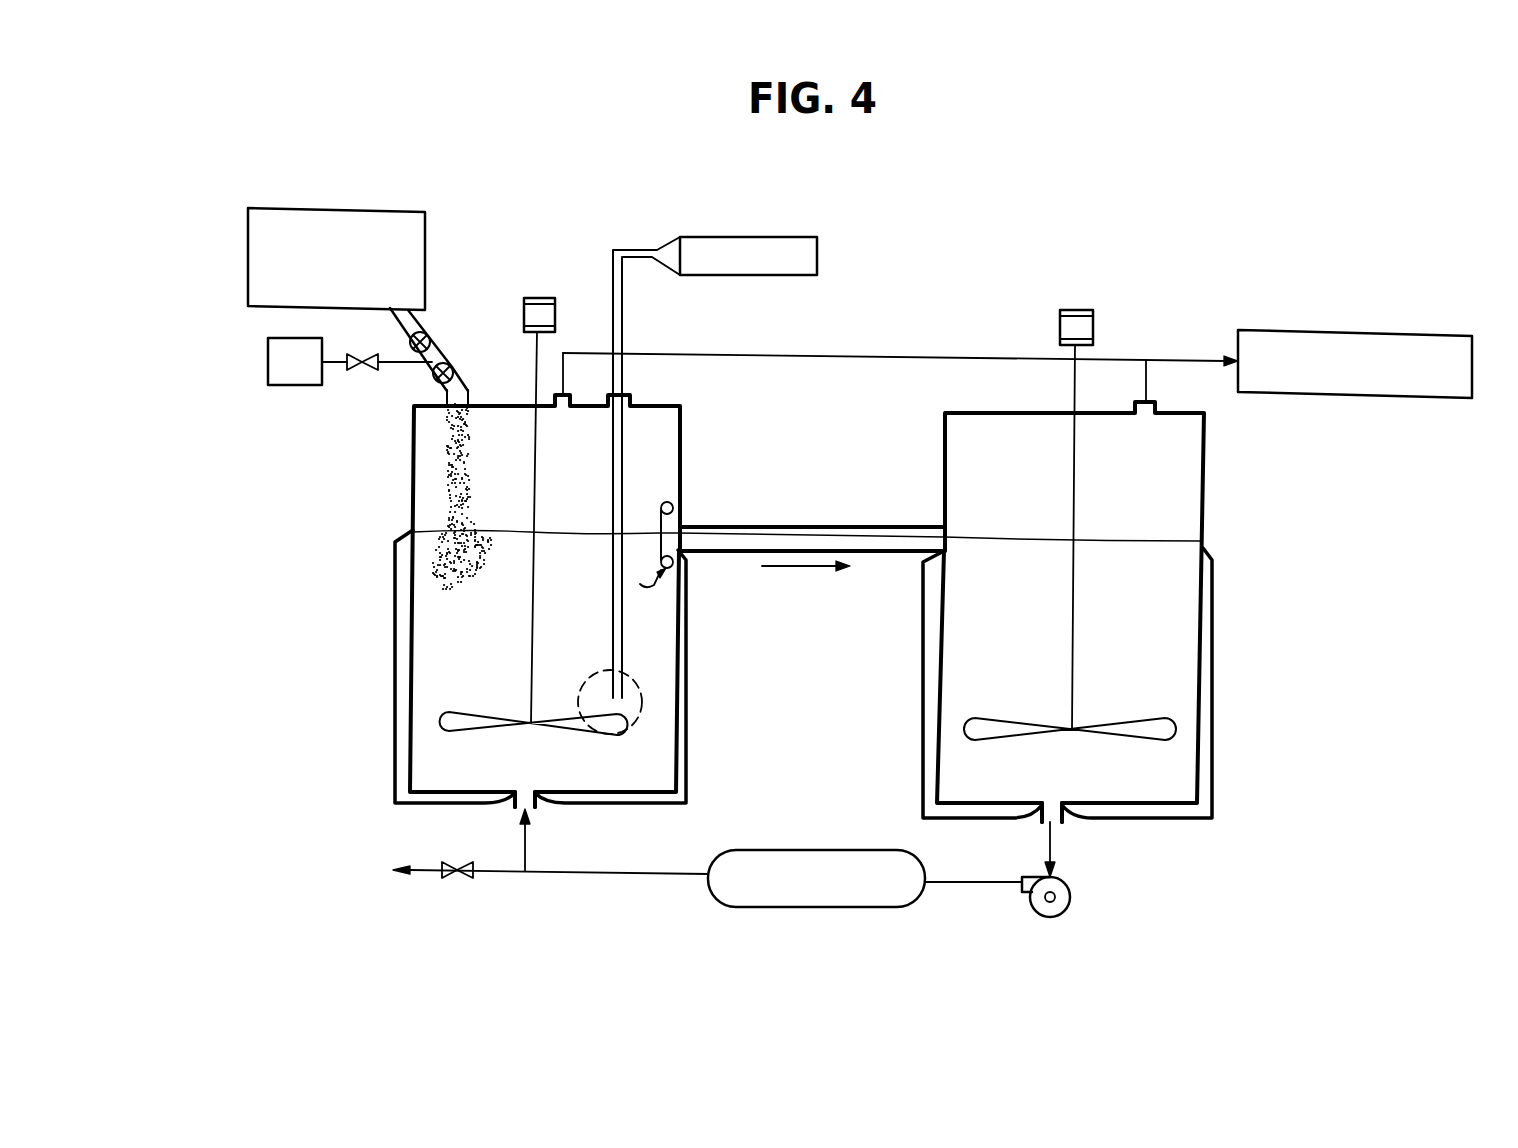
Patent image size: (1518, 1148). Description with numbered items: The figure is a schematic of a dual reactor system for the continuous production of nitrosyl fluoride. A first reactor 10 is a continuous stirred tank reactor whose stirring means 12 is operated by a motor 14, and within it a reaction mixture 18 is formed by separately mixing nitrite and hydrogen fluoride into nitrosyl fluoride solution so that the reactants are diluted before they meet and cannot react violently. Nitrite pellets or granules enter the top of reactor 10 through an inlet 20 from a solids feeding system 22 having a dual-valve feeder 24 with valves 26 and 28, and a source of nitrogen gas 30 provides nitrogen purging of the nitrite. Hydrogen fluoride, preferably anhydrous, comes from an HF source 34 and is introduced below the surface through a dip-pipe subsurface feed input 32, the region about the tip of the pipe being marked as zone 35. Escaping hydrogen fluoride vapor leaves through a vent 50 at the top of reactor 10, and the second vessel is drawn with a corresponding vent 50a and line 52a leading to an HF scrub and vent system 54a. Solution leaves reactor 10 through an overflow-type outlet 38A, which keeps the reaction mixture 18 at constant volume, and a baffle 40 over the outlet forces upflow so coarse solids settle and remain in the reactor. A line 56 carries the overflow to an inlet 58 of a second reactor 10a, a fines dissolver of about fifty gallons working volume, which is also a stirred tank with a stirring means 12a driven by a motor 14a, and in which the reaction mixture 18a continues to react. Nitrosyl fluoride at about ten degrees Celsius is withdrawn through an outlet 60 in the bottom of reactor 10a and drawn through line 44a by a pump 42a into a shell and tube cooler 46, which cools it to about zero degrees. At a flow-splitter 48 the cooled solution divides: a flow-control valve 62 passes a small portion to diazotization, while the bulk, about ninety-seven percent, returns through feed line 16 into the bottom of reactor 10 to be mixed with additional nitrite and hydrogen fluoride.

The reactor 10 is at (413, 489).
The second reactor 10a is at (1206, 508).
The stirring means 12 is at (447, 710).
The stirring means 12a is at (970, 718).
The motor 14 is at (541, 296).
The motor 14a is at (1095, 312).
The feed line 16 is at (528, 846).
The reaction mixture 18 is at (433, 640).
The reaction mixture 18a is at (1185, 688).
The inlet 20 is at (470, 400).
The solids feeding system 22 is at (426, 236).
The dual-valve feeder 24 is at (416, 318).
The valve 26 is at (431, 338).
The valve 28 is at (455, 366).
The source of nitrogen gas 30 is at (268, 374).
The dip-pipe subsurface feed input 32 is at (612, 655).
The HF source 34 is at (820, 268).
The HF tube outlet region 35 is at (600, 690).
The outlet 38A is at (682, 531).
The baffle 40 is at (660, 512).
The pump 42a is at (1067, 916).
The line 44a is at (1056, 849).
The cooler 46 is at (835, 897).
The flow-splitter 48 is at (526, 876).
The vent 50 is at (597, 389).
The vent nozzle of second vessel 50a is at (1158, 406).
The vent line 52a is at (905, 354).
The HF scrub and vent system 54a is at (1372, 337).
The line 56 is at (805, 527).
The inlet 58 is at (948, 534).
The outlet 60 is at (1050, 812).
The flow-control valve 62 is at (459, 881).